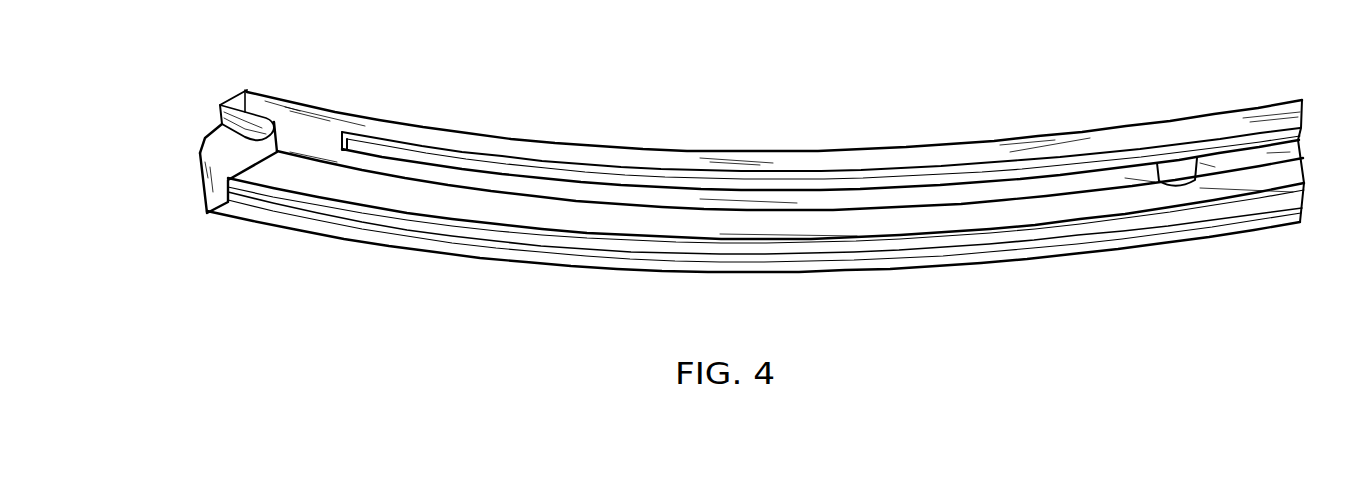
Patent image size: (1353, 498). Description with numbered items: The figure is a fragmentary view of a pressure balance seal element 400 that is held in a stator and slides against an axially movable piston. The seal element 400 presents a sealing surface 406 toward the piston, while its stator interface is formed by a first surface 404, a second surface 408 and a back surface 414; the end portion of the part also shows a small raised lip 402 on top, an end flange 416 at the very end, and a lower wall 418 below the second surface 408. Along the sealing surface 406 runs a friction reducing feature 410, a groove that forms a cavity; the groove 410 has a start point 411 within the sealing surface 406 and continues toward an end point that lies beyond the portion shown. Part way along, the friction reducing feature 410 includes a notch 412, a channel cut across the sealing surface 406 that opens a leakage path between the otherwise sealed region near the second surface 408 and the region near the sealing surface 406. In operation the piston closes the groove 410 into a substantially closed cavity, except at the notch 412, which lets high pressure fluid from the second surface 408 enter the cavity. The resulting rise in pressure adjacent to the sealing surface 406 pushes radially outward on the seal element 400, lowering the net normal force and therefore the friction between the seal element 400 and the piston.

The seal element 400 is at (945, 60).
The end tab 402 is at (233, 93).
The first surface 404 is at (353, 112).
The sealing surface 406 is at (805, 160).
The second surface 408 is at (505, 215).
The friction reducing feature 410 is at (535, 167).
The start point 411 is at (347, 150).
The notch 412 is at (1178, 180).
The back surface 414 is at (200, 183).
The end flange 416 is at (203, 140).
The bottom wall 418 is at (232, 214).